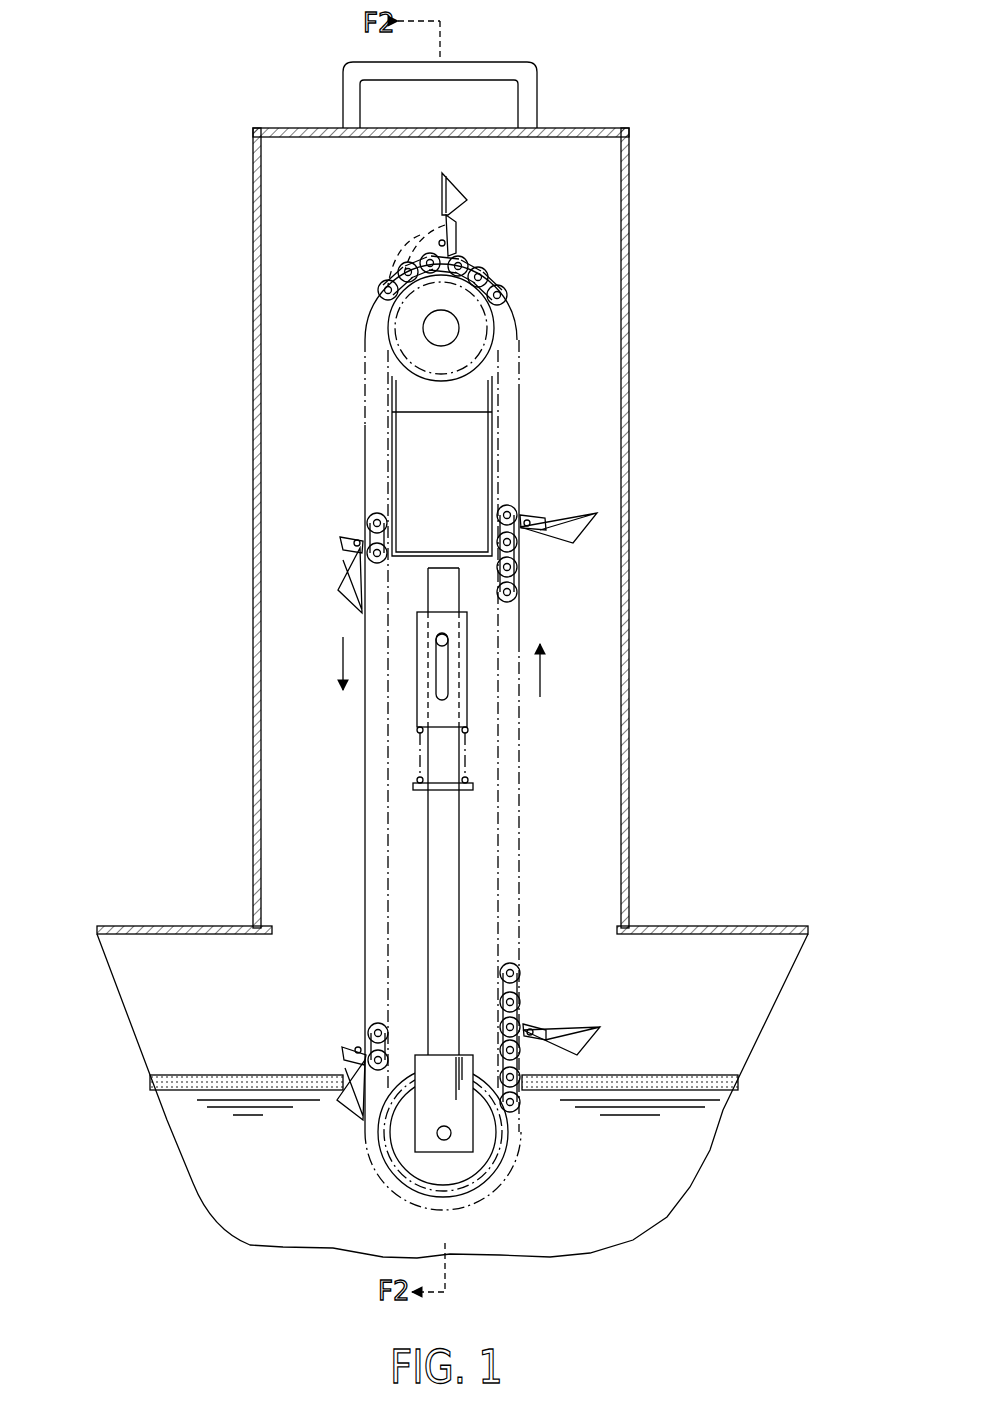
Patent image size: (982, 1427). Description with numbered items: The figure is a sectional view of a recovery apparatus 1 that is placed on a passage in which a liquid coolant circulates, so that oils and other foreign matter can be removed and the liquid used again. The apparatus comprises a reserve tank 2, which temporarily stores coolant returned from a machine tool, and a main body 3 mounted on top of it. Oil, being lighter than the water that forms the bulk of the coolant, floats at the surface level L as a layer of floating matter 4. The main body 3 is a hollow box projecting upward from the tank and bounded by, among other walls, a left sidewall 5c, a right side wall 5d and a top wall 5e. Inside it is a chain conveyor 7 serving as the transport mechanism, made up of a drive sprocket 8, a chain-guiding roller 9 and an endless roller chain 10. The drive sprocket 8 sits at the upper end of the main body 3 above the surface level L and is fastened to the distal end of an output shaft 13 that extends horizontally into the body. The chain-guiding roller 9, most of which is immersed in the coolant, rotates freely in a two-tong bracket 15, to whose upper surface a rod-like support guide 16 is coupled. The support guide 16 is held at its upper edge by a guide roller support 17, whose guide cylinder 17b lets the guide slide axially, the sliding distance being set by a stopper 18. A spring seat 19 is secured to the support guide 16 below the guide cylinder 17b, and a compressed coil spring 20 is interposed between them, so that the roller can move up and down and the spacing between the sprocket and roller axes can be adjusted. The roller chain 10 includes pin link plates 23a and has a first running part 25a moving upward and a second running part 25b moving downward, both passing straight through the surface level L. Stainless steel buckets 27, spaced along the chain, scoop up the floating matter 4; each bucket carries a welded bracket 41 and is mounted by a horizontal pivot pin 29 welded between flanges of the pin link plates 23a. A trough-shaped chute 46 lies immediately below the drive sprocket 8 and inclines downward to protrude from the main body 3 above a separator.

The recovery apparatus 1 is at (797, 236).
The reserve tank 2 is at (775, 926).
The main body 3 is at (630, 666).
The floating matter 4 is at (200, 1080).
The left sidewall 5c is at (253, 493).
The right side wall 5d is at (629, 390).
The top wall 5e is at (590, 128).
The chain conveyor 7 is at (357, 306).
The drive sprocket 8 is at (398, 328).
The chain-guiding roller 9 is at (472, 1170).
The endless roller chain 10 is at (518, 973).
The output shaft 13 is at (448, 330).
The two-tong bracket 15 is at (430, 1140).
The support guide 16 is at (430, 870).
The guide roller support 17 is at (418, 697).
The guide cylinder 17b is at (450, 712).
The stopper 18 is at (445, 640).
The spring seat 19 is at (470, 790).
The compressed coil spring 20 is at (418, 780).
The pin link plate 23a is at (472, 290).
The first running part 25a is at (520, 752).
The second running part 25b is at (360, 422).
The bucket 27 is at (465, 198).
The pivot pin 29 is at (448, 244).
The bracket 41 is at (455, 228).
The chute 46 is at (405, 445).
The surface level L is at (705, 1075).